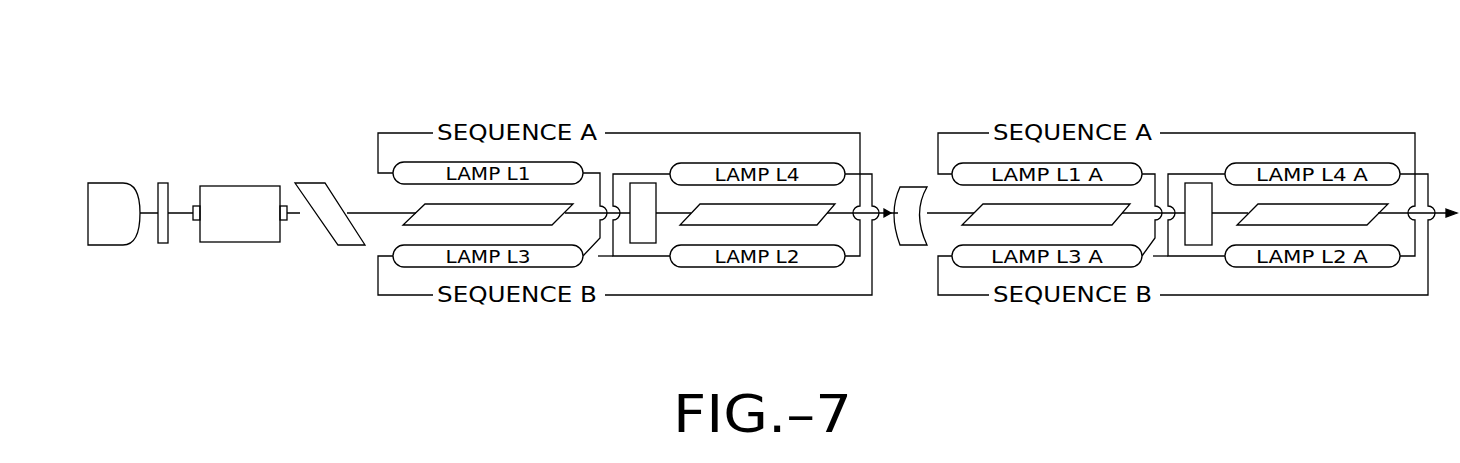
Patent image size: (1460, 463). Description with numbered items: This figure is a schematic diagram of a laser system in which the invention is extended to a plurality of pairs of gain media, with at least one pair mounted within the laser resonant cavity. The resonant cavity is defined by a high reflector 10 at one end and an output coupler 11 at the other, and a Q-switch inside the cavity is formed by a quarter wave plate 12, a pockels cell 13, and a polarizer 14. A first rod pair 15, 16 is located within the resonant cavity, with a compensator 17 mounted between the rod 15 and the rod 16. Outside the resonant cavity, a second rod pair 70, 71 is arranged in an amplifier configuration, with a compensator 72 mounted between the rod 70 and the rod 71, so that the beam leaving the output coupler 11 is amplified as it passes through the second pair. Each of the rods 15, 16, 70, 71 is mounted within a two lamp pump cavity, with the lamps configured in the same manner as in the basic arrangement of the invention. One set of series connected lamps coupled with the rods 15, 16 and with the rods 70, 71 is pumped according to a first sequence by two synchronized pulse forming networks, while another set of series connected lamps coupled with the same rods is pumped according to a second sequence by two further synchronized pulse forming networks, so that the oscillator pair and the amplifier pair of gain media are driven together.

The high reflector 10 is at (105, 183).
The output coupler 11 is at (917, 187).
The quarter wave plate 12 is at (163, 243).
The pockels cell 13 is at (232, 186).
The polarizer 14 is at (350, 245).
The rod 15 is at (523, 225).
The rod 16 is at (780, 225).
The compensator 17 is at (643, 183).
The rod 70 is at (1070, 225).
The rod 71 is at (1337, 225).
The compensator 72 is at (1197, 183).